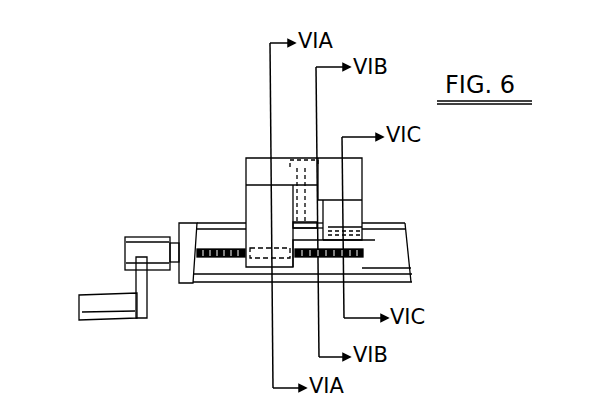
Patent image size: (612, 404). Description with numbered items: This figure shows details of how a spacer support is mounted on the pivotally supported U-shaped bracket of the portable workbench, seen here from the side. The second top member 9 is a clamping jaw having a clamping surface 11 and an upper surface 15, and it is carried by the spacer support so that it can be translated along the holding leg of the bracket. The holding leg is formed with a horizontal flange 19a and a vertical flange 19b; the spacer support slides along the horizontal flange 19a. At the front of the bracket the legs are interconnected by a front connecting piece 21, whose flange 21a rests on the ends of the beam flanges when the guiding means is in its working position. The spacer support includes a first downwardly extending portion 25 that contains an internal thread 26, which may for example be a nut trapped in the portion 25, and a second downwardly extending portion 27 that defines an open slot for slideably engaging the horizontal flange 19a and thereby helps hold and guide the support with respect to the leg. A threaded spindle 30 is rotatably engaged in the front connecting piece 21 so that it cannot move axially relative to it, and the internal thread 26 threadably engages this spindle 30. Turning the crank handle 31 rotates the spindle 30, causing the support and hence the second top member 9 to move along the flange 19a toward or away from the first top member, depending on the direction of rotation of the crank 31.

The second top member 9 is at (262, 166).
The clamping surface 11 is at (363, 180).
The upper surface 15 is at (328, 158).
The horizontal flange 19a is at (387, 225).
The vertical flange 19b is at (392, 264).
The front connecting piece 21 is at (199, 270).
The flange 21a is at (187, 222).
The first downwardly extending portion 25 is at (272, 268).
The internal thread 26 is at (244, 260).
The second downwardly extending portion 27 is at (365, 234).
The threaded spindle 30 is at (305, 262).
The crank handle 31 is at (96, 297).